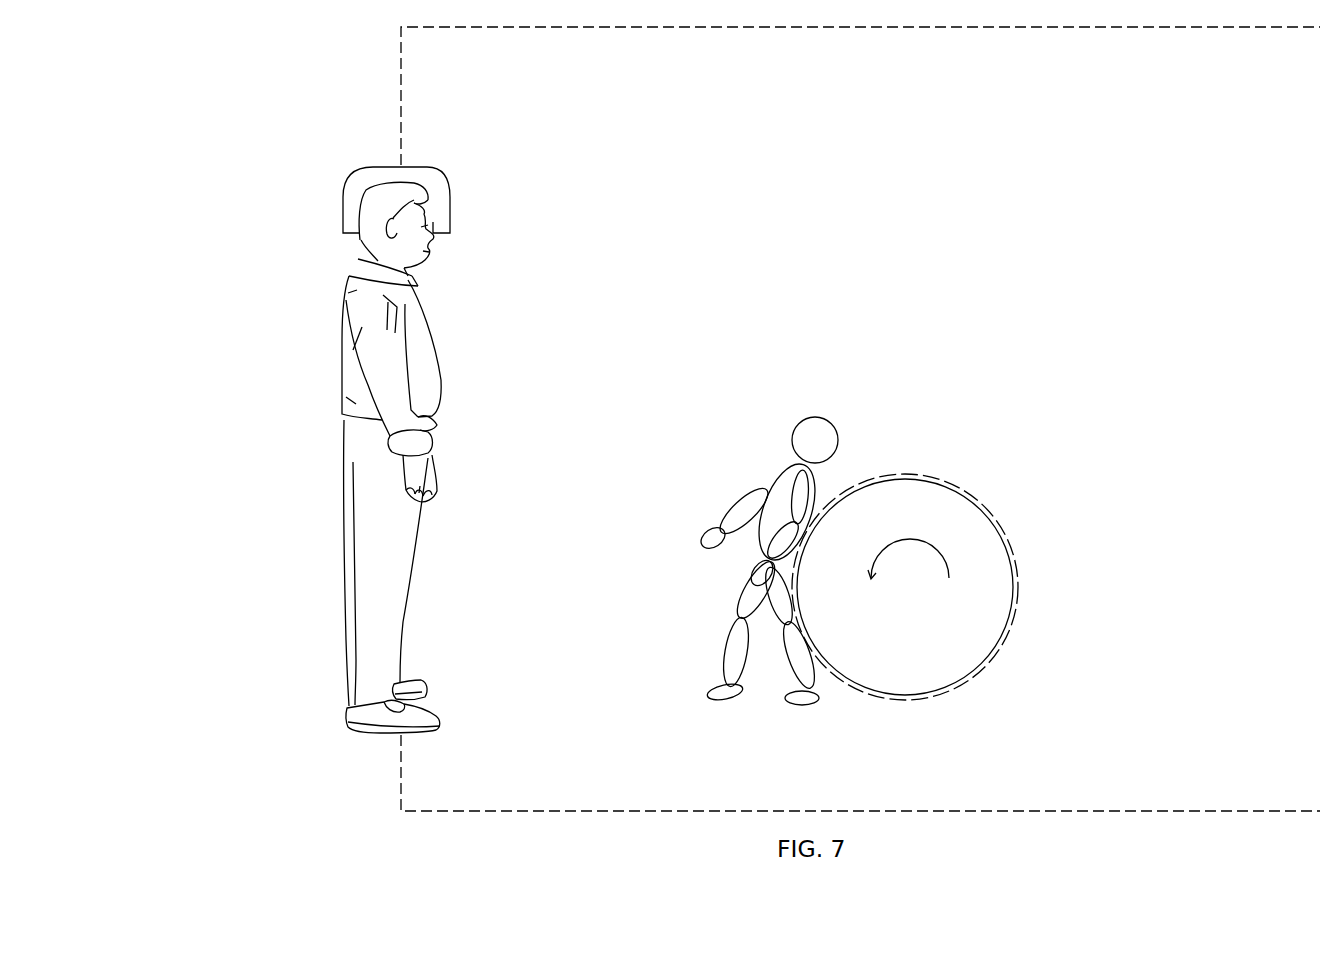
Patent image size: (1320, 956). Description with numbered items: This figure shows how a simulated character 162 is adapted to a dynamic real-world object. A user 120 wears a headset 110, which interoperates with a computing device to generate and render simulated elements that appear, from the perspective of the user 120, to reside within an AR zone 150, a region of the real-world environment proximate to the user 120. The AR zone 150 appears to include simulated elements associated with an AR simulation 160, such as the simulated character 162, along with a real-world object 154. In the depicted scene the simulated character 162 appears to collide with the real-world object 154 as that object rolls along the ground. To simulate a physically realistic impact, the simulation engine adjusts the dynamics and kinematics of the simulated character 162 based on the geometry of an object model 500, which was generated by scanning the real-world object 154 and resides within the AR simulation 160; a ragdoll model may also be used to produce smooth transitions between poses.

The headset 110 is at (368, 175).
The user 120 is at (340, 347).
The AR zone 150 is at (1278, 90).
The real-world object 154 is at (928, 639).
The AR simulation 160 is at (576, 98).
The simulated character 162 is at (818, 414).
The object model 500 is at (986, 513).